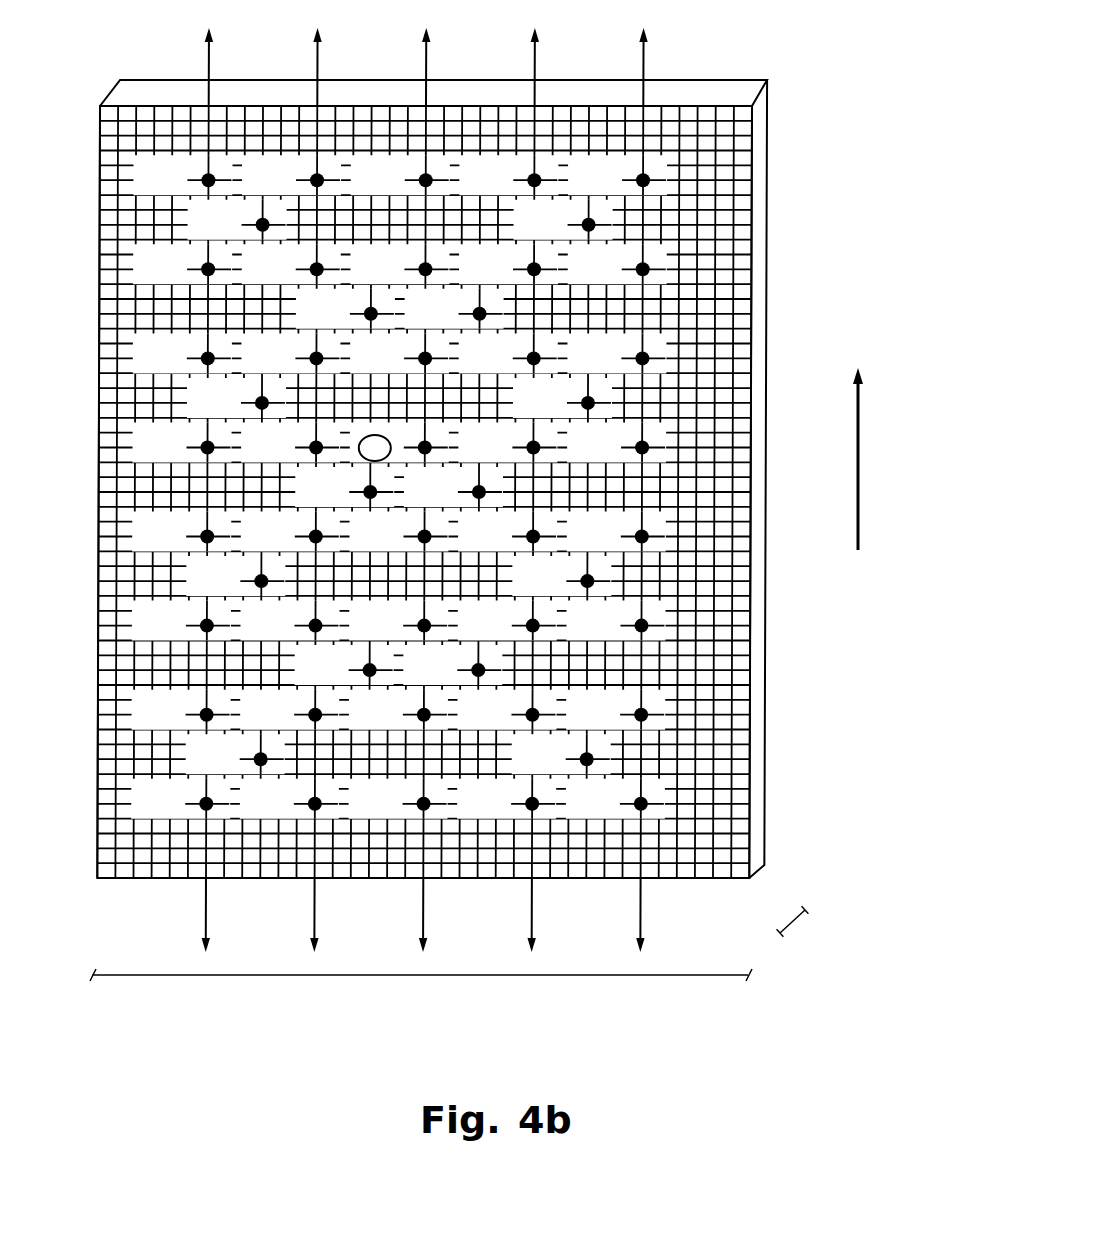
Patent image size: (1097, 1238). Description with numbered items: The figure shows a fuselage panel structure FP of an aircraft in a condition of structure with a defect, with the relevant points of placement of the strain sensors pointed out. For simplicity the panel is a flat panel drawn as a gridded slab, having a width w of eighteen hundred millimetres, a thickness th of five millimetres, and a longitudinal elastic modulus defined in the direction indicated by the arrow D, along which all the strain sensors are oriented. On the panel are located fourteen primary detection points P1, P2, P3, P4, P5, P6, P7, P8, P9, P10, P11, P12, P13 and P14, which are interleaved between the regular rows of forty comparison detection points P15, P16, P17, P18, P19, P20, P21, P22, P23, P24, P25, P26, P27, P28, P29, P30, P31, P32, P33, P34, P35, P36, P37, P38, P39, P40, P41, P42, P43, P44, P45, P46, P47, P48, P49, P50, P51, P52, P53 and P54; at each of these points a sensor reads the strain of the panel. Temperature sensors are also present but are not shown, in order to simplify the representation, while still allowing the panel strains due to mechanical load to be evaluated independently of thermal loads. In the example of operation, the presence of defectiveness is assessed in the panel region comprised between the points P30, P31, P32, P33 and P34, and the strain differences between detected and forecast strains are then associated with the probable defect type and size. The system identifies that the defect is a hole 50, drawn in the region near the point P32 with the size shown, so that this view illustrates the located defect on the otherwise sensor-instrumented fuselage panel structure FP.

The fuselage panel structure FP is at (802, 788).
The hole 50 is at (358, 447).
The direction D is at (878, 459).
The width w is at (243, 977).
The thickness th is at (793, 922).
The primary detection point P1 is at (237, 220).
The primary detection point P2 is at (563, 220).
The primary detection point P3 is at (345, 309).
The primary detection point P4 is at (454, 309).
The primary detection point P5 is at (236, 398).
The primary detection point P6 is at (562, 398).
The primary detection point P7 is at (344, 487).
The primary detection point P8 is at (453, 487).
The primary detection point P9 is at (235, 576).
The primary detection point P10 is at (561, 576).
The primary detection point P11 is at (344, 665).
The primary detection point P12 is at (452, 665).
The primary detection point P13 is at (235, 754).
The primary detection point P14 is at (561, 754).
The comparison detection point P15 is at (182, 175).
The comparison detection point P16 is at (291, 175).
The comparison detection point P17 is at (400, 175).
The comparison detection point P18 is at (508, 175).
The comparison detection point P19 is at (617, 175).
The comparison detection point P20 is at (182, 264).
The comparison detection point P21 is at (291, 264).
The comparison detection point P22 is at (399, 264).
The comparison detection point P23 is at (508, 264).
The comparison detection point P24 is at (617, 264).
The comparison detection point P25 is at (182, 353).
The comparison detection point P26 is at (290, 353).
The comparison detection point P27 is at (399, 353).
The comparison detection point P28 is at (508, 353).
The comparison detection point P29 is at (616, 353).
The comparison detection point P30 is at (181, 443).
The comparison detection point P31 is at (290, 443).
The comparison detection point P32 is at (399, 430).
The comparison detection point P33 is at (507, 443).
The comparison detection point P34 is at (616, 443).
The comparison detection point P35 is at (181, 532).
The comparison detection point P36 is at (290, 532).
The comparison detection point P37 is at (398, 532).
The comparison detection point P38 is at (507, 532).
The comparison detection point P39 is at (616, 532).
The comparison detection point P40 is at (181, 621).
The comparison detection point P41 is at (289, 621).
The comparison detection point P42 is at (398, 621).
The comparison detection point P43 is at (507, 621).
The comparison detection point P44 is at (615, 621).
The comparison detection point P45 is at (181, 710).
The comparison detection point P46 is at (289, 710).
The comparison detection point P47 is at (398, 710).
The comparison detection point P48 is at (506, 710).
The comparison detection point P49 is at (615, 710).
The comparison detection point P50 is at (180, 799).
The comparison detection point P51 is at (289, 799).
The comparison detection point P52 is at (398, 799).
The comparison detection point P53 is at (506, 799).
The comparison detection point P54 is at (615, 799).